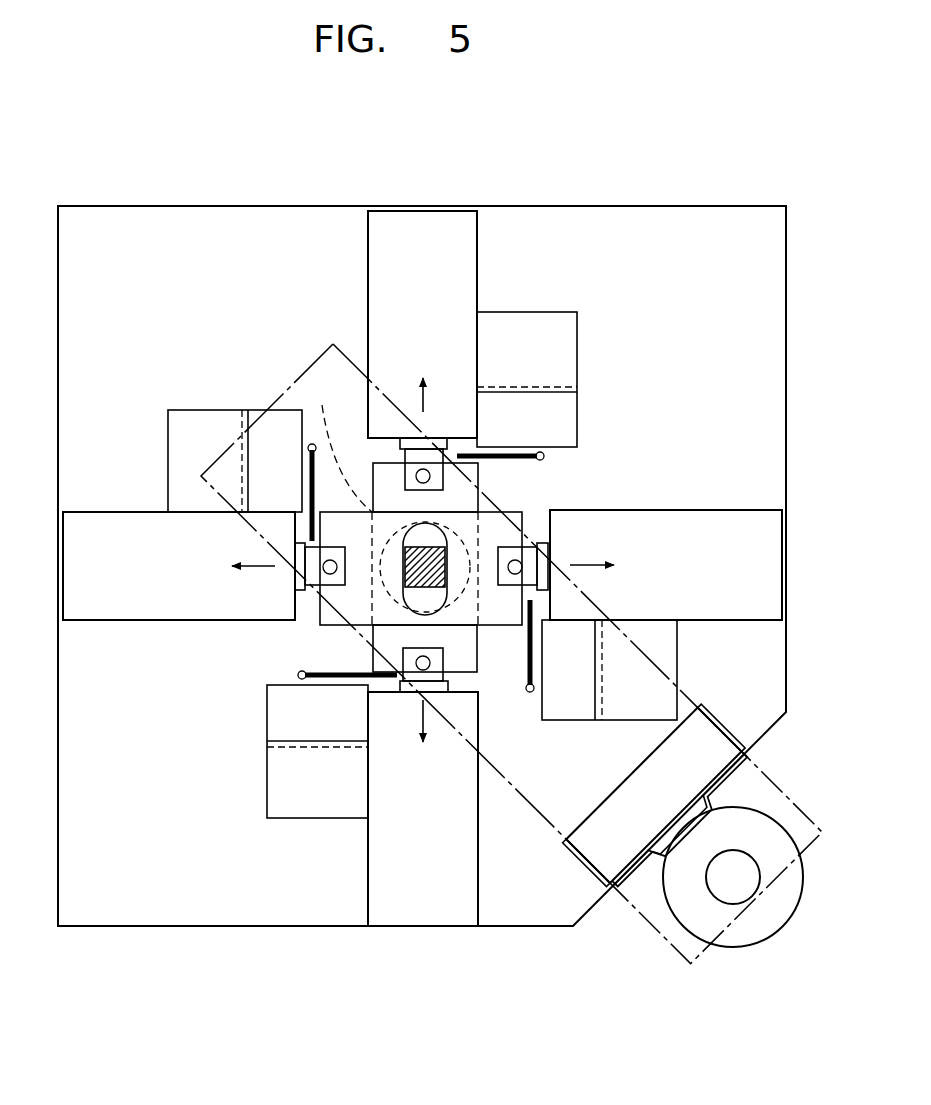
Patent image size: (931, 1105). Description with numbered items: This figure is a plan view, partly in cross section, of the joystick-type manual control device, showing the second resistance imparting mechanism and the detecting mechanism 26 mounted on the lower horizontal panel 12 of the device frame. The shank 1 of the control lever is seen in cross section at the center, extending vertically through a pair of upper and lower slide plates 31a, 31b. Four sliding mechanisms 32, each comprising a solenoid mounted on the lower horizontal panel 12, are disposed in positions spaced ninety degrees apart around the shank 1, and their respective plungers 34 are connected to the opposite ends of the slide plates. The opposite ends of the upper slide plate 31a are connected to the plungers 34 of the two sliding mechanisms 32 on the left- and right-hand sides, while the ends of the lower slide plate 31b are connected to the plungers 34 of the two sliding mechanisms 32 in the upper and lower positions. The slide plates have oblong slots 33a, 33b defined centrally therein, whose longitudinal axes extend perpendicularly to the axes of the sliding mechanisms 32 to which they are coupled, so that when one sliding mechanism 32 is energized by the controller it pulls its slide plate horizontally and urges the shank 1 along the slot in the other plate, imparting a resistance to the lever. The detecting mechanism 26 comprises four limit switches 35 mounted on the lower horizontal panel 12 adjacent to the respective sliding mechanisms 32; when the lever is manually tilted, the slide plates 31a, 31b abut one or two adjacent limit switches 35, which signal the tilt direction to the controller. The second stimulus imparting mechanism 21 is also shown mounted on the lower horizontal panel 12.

The shank 1 is at (435, 566).
The lower horizontal panel 12 is at (195, 233).
The second stimulus imparting mechanism 21 is at (765, 800).
The detecting mechanism 26 is at (596, 351).
The upper slide plate 31a is at (463, 643).
The lower slide plate 31b is at (463, 507).
The sliding mechanism 32 is at (368, 262).
The oblong slot 33a is at (415, 600).
The oblong slot 33b is at (337, 501).
The plunger 34 is at (417, 458).
The limit switch 35 is at (574, 418).